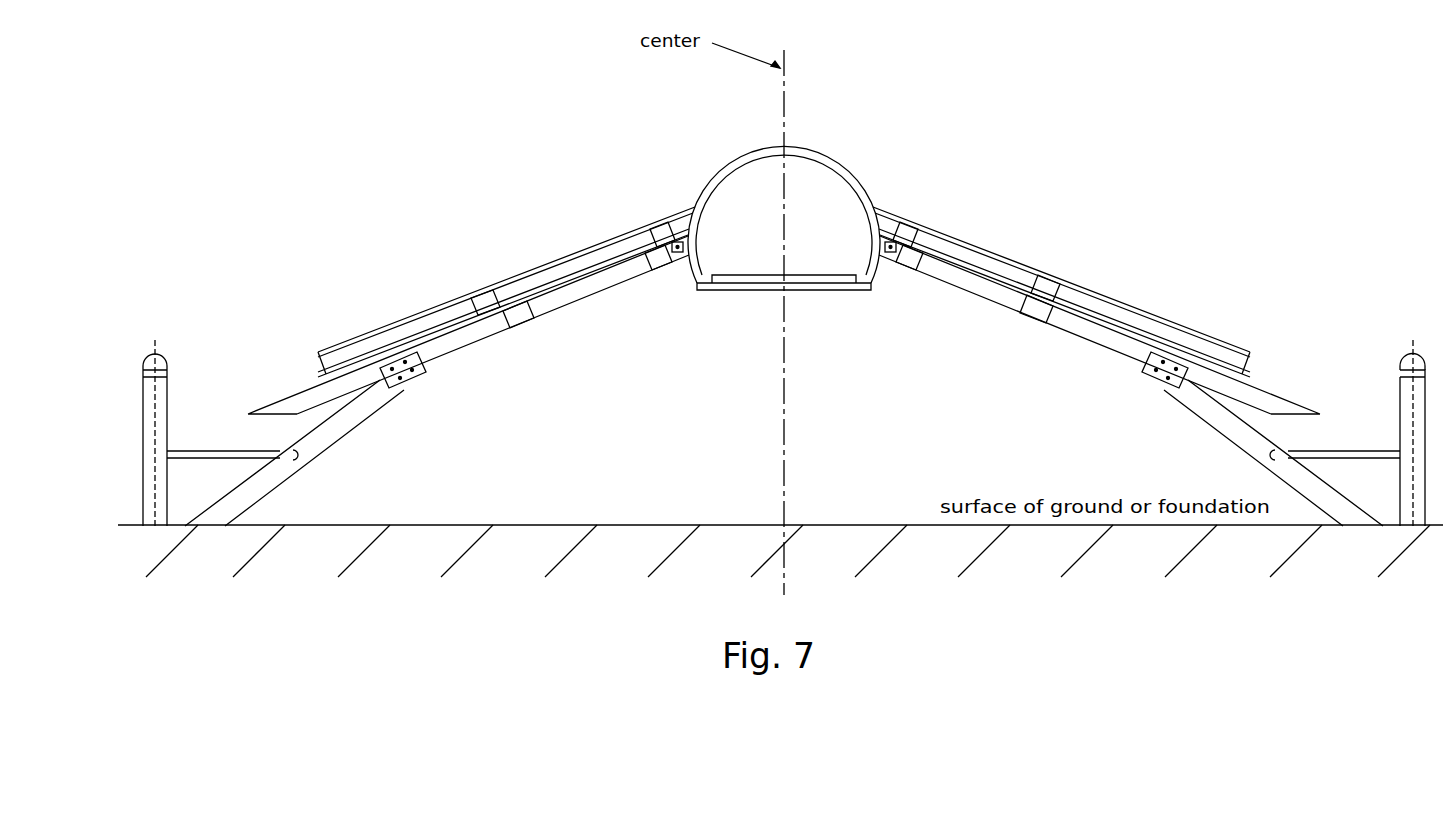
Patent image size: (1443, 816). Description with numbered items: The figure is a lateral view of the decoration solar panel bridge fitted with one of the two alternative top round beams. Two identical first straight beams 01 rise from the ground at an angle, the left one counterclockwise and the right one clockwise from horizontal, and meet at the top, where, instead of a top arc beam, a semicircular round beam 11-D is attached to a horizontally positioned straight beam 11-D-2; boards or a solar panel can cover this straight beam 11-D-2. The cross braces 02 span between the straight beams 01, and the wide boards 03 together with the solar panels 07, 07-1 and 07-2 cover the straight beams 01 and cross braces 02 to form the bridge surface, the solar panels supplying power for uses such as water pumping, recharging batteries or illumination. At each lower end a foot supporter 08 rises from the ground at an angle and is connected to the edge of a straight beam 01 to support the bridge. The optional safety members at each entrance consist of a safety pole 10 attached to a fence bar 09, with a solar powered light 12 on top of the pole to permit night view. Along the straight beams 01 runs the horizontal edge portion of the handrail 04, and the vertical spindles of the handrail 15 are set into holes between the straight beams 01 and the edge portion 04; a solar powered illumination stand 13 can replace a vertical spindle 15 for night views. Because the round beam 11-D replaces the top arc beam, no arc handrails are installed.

The first straight beam 01 is at (317, 397).
The cross brace 02 is at (372, 383).
The wide board 03 is at (772, 207).
The edge portion of handrail 04 is at (543, 260).
The solar panel 07 is at (475, 313).
The solar panel 07-1 is at (963, 240).
The solar panel 07-2 is at (1040, 273).
The foot supporter 08 is at (1230, 430).
The fence bar 09 is at (1325, 450).
The safety pole 10 is at (1405, 417).
The semicircular round beam 11-D is at (720, 170).
The straight beam 11-D-2 is at (822, 275).
The solar powered light 12 is at (1418, 353).
The solar powered illumination stand 13 is at (662, 223).
The vertical spindle of the handrail 15 is at (506, 250).